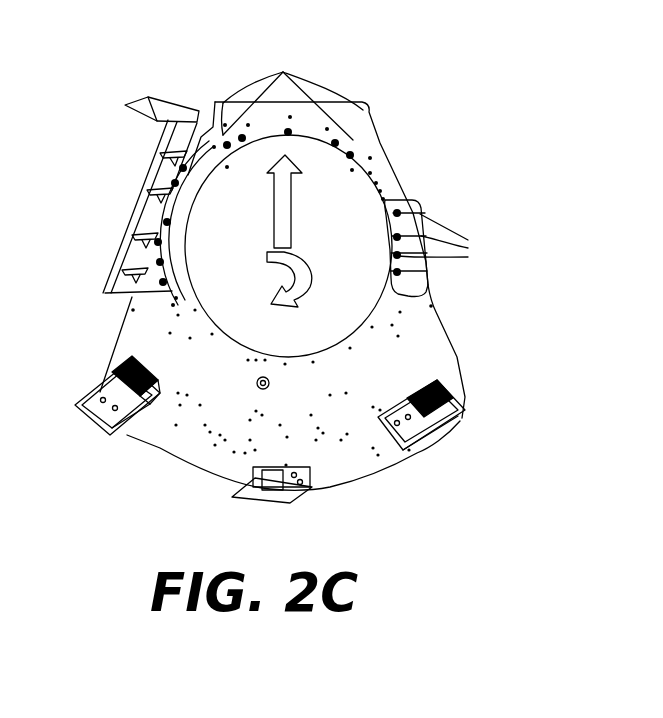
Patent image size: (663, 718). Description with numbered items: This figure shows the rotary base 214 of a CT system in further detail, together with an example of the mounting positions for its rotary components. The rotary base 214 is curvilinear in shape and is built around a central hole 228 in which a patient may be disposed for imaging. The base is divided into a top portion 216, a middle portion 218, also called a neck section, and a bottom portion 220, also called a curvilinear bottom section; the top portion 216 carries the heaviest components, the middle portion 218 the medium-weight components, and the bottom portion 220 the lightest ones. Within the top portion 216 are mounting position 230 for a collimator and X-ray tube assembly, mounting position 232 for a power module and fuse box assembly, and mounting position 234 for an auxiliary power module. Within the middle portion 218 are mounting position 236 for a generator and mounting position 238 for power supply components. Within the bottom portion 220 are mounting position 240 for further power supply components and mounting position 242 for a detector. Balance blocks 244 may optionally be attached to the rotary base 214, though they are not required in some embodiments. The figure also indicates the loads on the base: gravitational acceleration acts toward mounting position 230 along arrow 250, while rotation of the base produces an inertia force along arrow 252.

The rotary base 214 is at (248, 31).
The top portion 216 is at (362, 130).
The middle portion 218 is at (390, 192).
The bottom portion 220 is at (452, 363).
The central hole 228 is at (242, 233).
The mounting position 230 is at (293, 90).
The mounting position 232 is at (152, 97).
The mounting position 234 is at (160, 122).
The mounting position 236 is at (450, 235).
The mounting position 238 is at (140, 222).
The mounting position 240 is at (113, 373).
The mounting position 242 is at (133, 310).
The balance blocks 244 is at (125, 442).
The arrow 250 is at (293, 213).
The arrow 252 is at (287, 303).